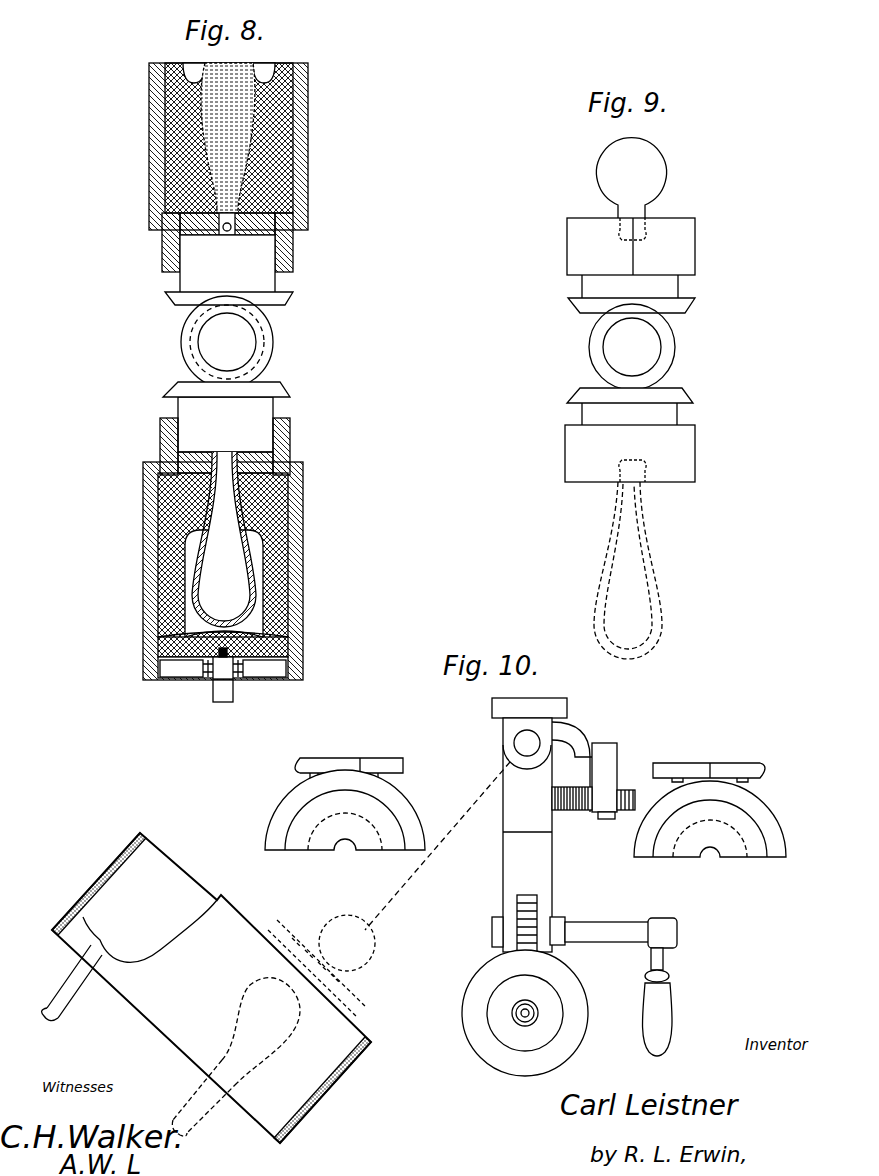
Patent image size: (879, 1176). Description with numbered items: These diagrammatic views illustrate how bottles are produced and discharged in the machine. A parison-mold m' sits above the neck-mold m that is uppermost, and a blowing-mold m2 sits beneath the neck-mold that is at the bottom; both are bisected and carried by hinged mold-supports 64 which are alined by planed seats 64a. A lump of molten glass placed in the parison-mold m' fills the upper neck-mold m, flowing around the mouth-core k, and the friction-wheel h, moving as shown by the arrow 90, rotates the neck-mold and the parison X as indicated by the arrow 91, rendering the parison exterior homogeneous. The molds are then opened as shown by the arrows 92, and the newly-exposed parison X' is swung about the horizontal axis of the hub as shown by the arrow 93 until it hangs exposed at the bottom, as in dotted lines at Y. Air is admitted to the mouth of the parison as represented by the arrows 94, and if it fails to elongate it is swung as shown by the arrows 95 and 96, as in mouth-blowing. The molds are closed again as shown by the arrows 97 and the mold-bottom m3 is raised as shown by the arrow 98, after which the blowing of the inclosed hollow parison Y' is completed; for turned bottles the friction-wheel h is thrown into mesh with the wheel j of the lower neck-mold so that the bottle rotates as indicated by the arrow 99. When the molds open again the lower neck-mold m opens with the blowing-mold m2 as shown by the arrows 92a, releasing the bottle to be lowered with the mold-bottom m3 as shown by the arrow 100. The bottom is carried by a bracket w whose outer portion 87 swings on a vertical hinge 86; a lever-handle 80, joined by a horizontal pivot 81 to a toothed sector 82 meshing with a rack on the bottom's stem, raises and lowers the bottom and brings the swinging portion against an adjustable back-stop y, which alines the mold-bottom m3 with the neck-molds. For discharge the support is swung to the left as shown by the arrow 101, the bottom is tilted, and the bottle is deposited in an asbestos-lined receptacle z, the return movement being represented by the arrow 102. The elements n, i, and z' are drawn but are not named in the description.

In FIG. 8, the parison-mold m' is at (210, 146).
In FIG. 8, the parison X is at (229, 138).
In FIG. 8, the neck-mold m is at (209, 242).
In FIG. 9, the neck-mold m is at (630, 350).
In FIG. 8, the mouth-core k is at (227, 232).
In FIG. 8, the mold neck block n is at (226, 343).
In FIG. 8, the upper plate i is at (287, 298).
In FIG. 8, the arrow 91 is at (218, 299).
In FIG. 9, the arrow 91 is at (682, 305).
In FIG. 8, the friction-wheel h is at (237, 342).
In FIG. 9, the friction-wheel h is at (642, 347).
In FIG. 8, the arrow 90 is at (189, 318).
In FIG. 9, the arrow 90 is at (596, 322).
In FIG. 8, the arrows 94 is at (227, 446).
In FIG. 9, the arrows 94 is at (632, 452).
In FIG. 8, the wheel j is at (284, 393).
In FIG. 9, the wheel j is at (688, 394).
In FIG. 8, the arrow 99 is at (218, 389).
In FIG. 8, the blowing-mold m2 is at (144, 604).
In FIG. 10, the blowing-mold m2 is at (528, 813).
In FIG. 8, the inclosed hollow parison Y' is at (224, 544).
In FIG. 8, the mold-bottom m3 is at (290, 651).
In FIG. 10, the mold-bottom m3 is at (402, 970).
In FIG. 8, the arrows 92 is at (140, 143).
In FIG. 8, the arrows 97 is at (140, 153).
In FIG. 8, the arrows 92a is at (152, 438).
In FIG. 8, the arrow 98 is at (217, 712).
In FIG. 8, the arrow 100 is at (228, 712).
In FIG. 9, the newly-exposed parison X' is at (632, 178).
In FIG. 9, the arrow 93 is at (690, 170).
In FIG. 9, the parison Y is at (628, 570).
In FIG. 9, the arrow 95 is at (585, 553).
In FIG. 9, the arrow 96 is at (735, 530).
In FIG. 10, the bracket w is at (529, 709).
In FIG. 10, the outer portion of the bracket 87 is at (527, 835).
In FIG. 10, the hinge 86 is at (514, 744).
In FIG. 10, the back-stop y is at (568, 811).
In FIG. 10, the mold-supports 64 is at (298, 766).
In FIG. 10, the planed seats 64a is at (365, 760).
In FIG. 10, the toothed sector 82 is at (537, 915).
In FIG. 10, the horizontal pivot 81 is at (605, 930).
In FIG. 10, the lever-handle 80 is at (665, 1018).
In FIG. 10, the asbestos-lined receptacle z is at (393, 1013).
In FIG. 10, the mold section z' is at (206, 988).
In FIG. 10, the arrow 102 is at (480, 1010).
In FIG. 10, the arrow 101 is at (398, 987).